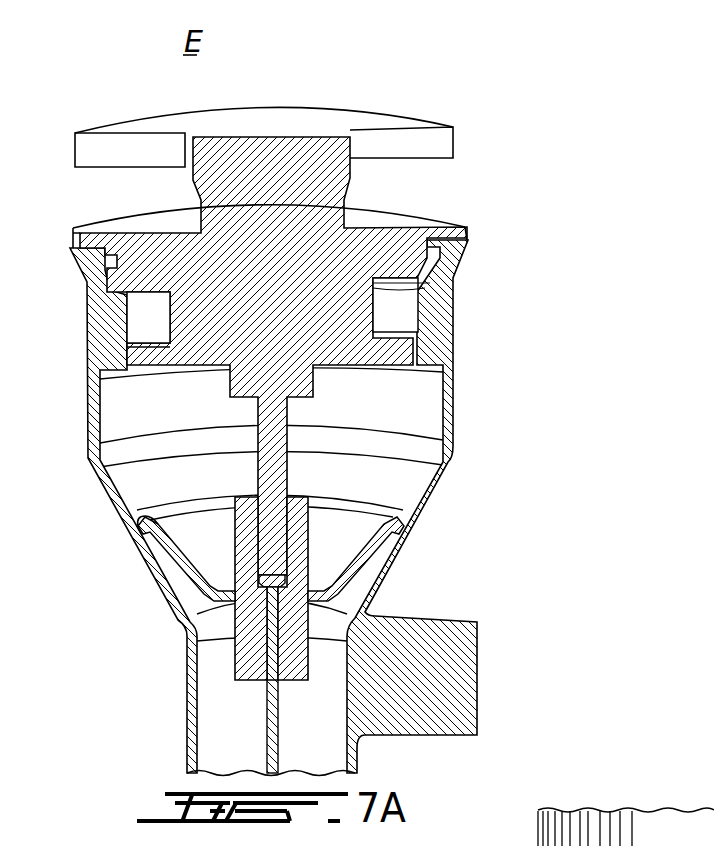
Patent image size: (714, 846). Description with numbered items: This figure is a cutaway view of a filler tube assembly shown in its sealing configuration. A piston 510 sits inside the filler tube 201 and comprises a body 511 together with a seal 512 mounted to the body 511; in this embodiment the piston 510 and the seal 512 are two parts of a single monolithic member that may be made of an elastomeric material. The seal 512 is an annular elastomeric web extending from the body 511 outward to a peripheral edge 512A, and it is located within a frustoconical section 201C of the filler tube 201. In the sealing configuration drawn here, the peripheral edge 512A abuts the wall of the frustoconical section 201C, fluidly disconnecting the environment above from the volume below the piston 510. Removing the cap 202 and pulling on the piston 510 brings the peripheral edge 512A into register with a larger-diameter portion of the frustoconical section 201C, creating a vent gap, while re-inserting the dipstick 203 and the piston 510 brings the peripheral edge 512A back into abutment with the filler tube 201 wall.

The cap 202 is at (346, 110).
The filler tube 201 is at (454, 343).
The frustoconical section 201C is at (400, 511).
The piston 510 is at (346, 502).
The body 511 is at (310, 607).
The seal 512 is at (177, 552).
The peripheral edge 512A is at (143, 522).
The dipstick 203 is at (270, 723).